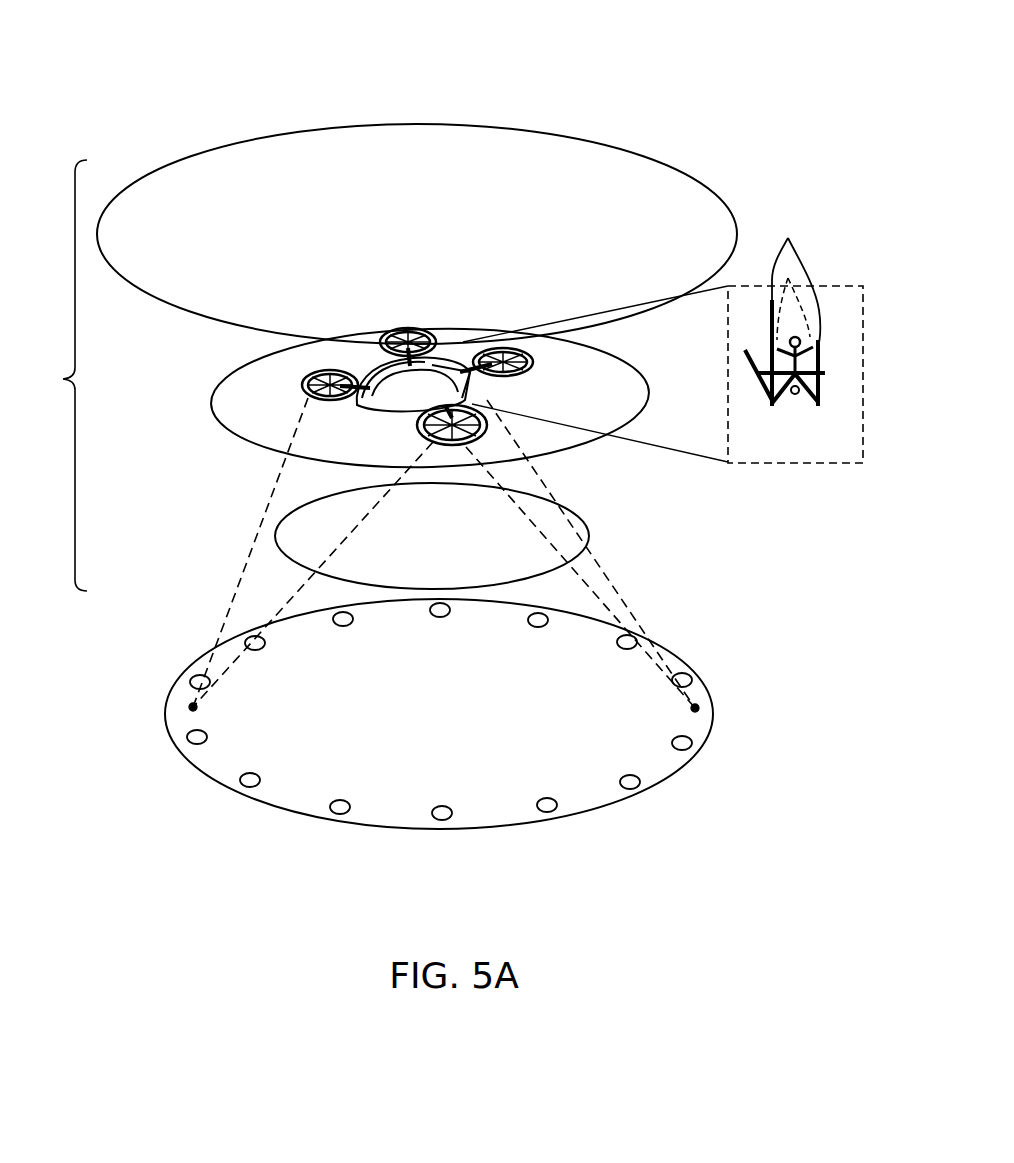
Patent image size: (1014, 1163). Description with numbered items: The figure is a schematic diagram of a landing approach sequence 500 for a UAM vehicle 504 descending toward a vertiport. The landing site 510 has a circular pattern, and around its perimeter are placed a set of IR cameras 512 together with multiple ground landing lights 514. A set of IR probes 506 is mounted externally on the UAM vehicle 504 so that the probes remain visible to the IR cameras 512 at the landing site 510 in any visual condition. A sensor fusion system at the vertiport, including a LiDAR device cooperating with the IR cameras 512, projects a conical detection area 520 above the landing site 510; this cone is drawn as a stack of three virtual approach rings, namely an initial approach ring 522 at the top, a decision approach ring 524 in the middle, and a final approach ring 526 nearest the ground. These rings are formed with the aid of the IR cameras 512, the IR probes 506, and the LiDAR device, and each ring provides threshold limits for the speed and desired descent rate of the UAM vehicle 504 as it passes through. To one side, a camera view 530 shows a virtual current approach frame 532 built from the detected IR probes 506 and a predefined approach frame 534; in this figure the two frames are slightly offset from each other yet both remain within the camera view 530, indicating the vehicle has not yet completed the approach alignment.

The landing approach sequence 500 is at (143, 59).
The UAM vehicle 504 is at (452, 345).
The IR probes 506 is at (792, 281).
The landing site 510 is at (643, 792).
The IR cameras 512 is at (180, 706).
The ground landing lights 514 is at (185, 737).
The conical detection area 520 is at (372, 335).
The initial approach ring 522 is at (609, 157).
The decision approach ring 524 is at (224, 402).
The final approach ring 526 is at (585, 524).
The camera view 530 is at (727, 363).
The virtual current approach frame 532 is at (820, 382).
The predefined approach frame 534 is at (767, 375).